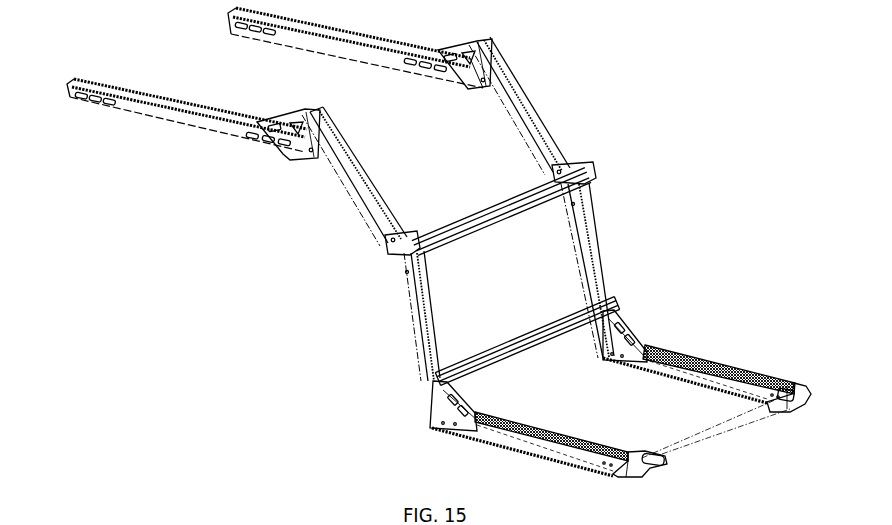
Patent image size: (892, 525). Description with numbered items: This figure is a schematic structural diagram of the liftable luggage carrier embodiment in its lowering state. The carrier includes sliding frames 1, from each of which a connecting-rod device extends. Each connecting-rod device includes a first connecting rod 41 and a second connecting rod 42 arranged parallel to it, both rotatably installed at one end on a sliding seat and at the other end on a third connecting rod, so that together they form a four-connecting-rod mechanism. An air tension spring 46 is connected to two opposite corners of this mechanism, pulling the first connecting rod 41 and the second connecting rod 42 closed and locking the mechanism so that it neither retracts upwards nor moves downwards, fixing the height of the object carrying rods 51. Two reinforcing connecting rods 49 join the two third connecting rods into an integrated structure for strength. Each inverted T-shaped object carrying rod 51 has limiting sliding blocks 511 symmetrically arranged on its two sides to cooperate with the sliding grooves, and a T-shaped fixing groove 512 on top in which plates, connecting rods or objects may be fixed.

The sliding frame 1 is at (160, 118).
The first connecting rod 41 is at (347, 198).
The second connecting rod 42 is at (358, 168).
The air tension spring 46 is at (408, 336).
The reinforcing connecting rod 49 is at (483, 228).
The object carrying rod 51 is at (548, 428).
The limiting sliding block 511 is at (547, 460).
The fixing groove 512 is at (502, 418).